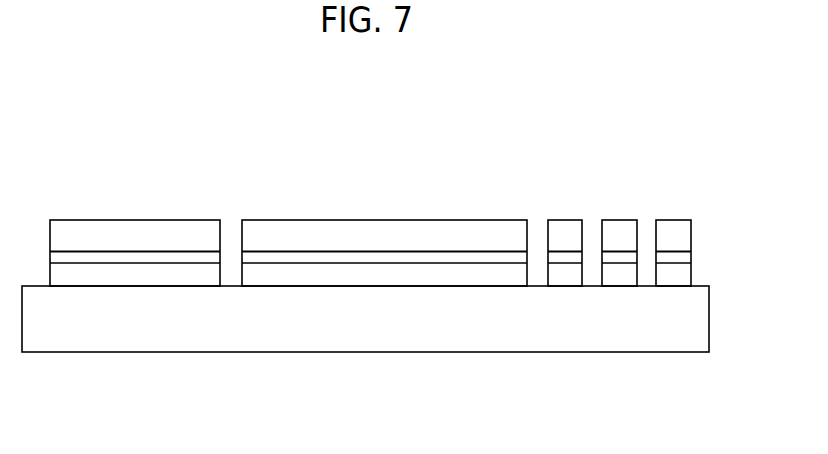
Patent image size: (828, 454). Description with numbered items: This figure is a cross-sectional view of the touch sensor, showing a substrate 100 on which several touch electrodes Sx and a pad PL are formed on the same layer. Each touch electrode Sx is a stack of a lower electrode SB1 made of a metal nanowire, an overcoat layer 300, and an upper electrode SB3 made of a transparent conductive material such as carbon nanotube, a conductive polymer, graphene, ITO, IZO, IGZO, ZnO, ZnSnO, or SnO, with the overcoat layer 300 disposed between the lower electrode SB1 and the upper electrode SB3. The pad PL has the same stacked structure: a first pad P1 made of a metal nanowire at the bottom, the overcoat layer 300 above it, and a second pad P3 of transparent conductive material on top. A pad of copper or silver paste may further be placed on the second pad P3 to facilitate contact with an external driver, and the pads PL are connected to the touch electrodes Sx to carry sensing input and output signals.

The substrate 100 is at (47, 345).
The overcoat layer 300 is at (340, 257).
The lower electrode SB1 is at (101, 278).
The upper electrode SB3 is at (142, 240).
The first pad P1 is at (452, 277).
The second pad P3 is at (479, 240).
The touch electrode Sx is at (182, 402).
The pad PL is at (598, 402).